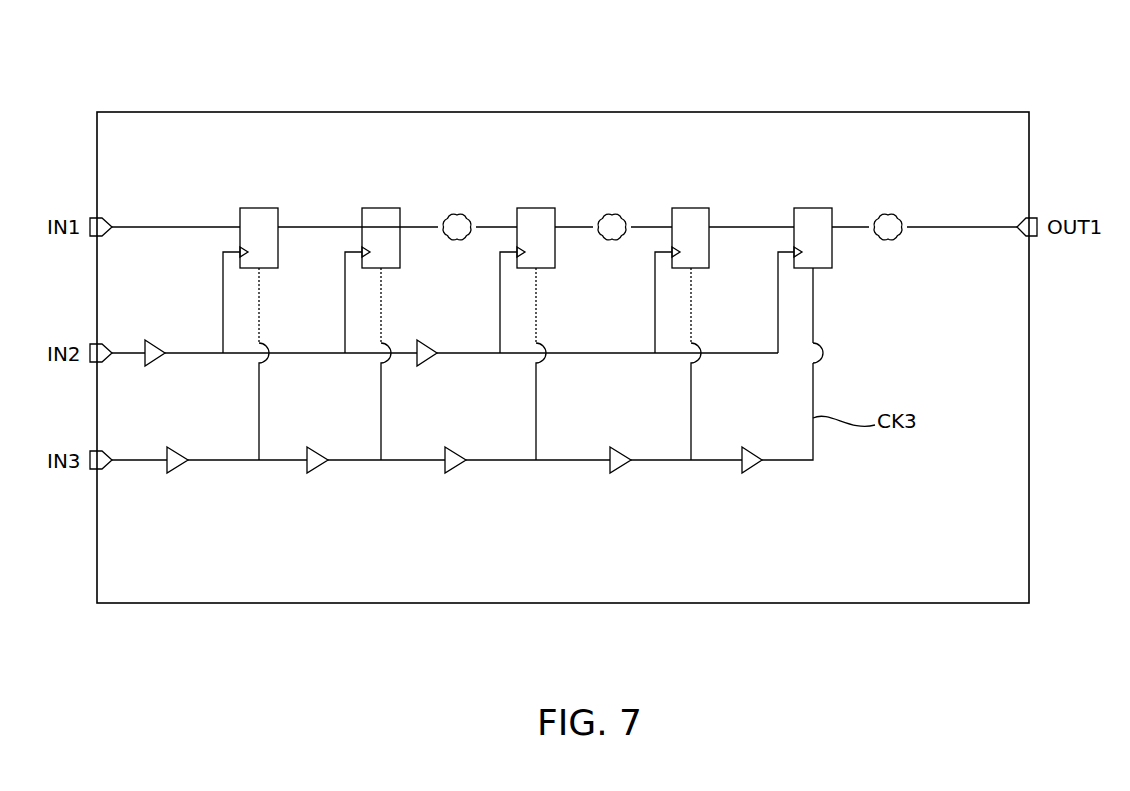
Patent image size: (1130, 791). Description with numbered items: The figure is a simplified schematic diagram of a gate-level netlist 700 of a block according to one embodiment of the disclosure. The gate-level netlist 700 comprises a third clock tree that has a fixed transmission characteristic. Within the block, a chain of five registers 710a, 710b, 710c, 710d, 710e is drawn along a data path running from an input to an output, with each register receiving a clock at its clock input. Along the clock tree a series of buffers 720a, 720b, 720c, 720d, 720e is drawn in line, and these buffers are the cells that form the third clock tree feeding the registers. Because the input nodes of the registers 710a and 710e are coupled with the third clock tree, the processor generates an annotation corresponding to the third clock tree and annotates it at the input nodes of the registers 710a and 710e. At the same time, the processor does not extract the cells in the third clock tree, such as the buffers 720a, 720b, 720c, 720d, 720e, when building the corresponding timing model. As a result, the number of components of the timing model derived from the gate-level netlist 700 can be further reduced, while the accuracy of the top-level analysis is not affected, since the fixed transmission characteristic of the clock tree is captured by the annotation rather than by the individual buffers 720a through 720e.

The gate-level netlist 700 is at (127, 42).
The register 710a is at (262, 208).
The register 710b is at (384, 208).
The register 710c is at (538, 208).
The register 710d is at (694, 208).
The register 710e is at (814, 208).
The buffer 720a is at (177, 472).
The buffer 720b is at (317, 472).
The buffer 720c is at (455, 472).
The buffer 720d is at (620, 472).
The buffer 720e is at (752, 472).